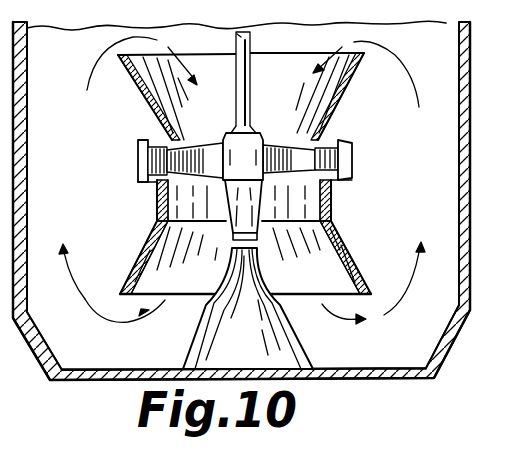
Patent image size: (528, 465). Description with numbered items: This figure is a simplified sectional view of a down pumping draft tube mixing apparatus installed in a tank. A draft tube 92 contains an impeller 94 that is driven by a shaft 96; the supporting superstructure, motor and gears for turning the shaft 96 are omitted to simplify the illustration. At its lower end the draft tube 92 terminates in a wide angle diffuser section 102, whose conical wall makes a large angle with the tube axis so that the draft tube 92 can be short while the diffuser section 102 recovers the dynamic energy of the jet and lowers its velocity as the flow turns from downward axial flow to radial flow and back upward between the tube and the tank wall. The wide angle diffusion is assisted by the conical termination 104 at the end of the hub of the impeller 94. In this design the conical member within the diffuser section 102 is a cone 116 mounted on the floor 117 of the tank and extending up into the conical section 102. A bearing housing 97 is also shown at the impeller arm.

The draft tube 92 is at (343, 107).
The impeller 94 is at (263, 126).
The shaft 96 is at (235, 111).
The bearing housing 97 is at (352, 161).
The wide angle diffuser section 102 is at (341, 248).
The conical termination 104 is at (229, 207).
The cone 116 is at (193, 339).
The floor 117 is at (349, 366).